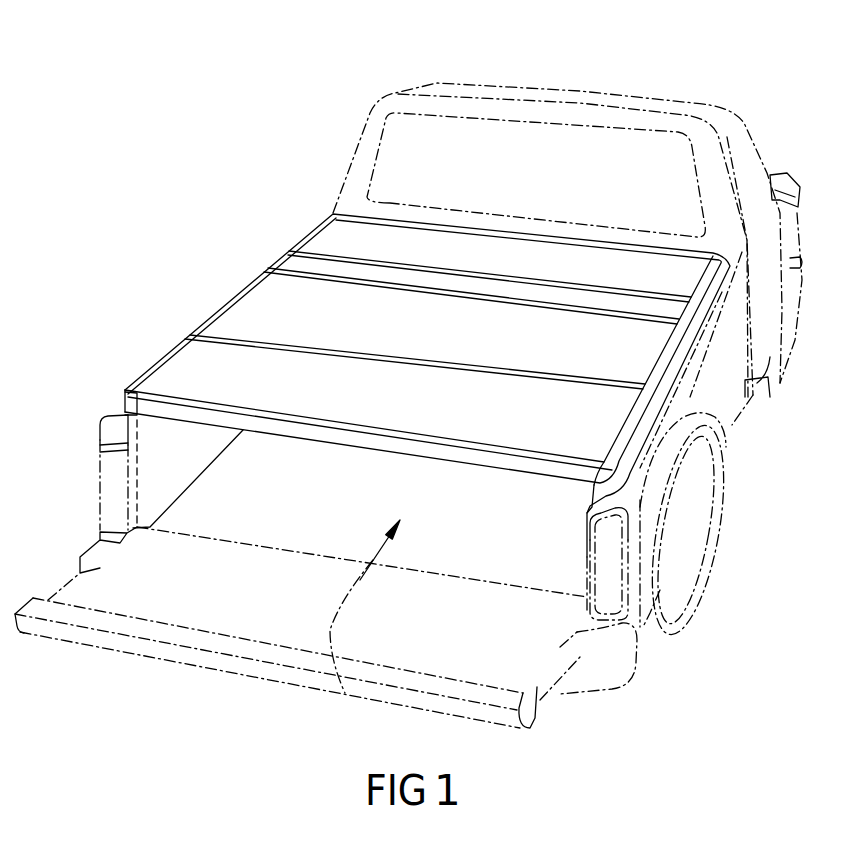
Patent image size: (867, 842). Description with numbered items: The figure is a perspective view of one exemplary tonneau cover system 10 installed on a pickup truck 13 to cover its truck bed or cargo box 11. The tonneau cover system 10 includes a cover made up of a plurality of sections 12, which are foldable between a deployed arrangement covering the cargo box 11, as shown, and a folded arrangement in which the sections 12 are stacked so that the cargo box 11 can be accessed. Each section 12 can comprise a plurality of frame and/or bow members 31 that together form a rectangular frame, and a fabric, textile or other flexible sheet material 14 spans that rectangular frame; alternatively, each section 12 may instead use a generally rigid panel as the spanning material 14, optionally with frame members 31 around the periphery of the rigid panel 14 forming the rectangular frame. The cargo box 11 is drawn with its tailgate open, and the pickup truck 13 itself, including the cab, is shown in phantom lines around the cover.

The tonneau cover system 10 is at (165, 179).
The truck bed or cargo box 11 is at (345, 693).
The sections 12 is at (303, 228).
The pickup truck 13 is at (378, 92).
The flexible sheet material 14 is at (193, 350).
The frame and/or bow members 31 is at (117, 403).